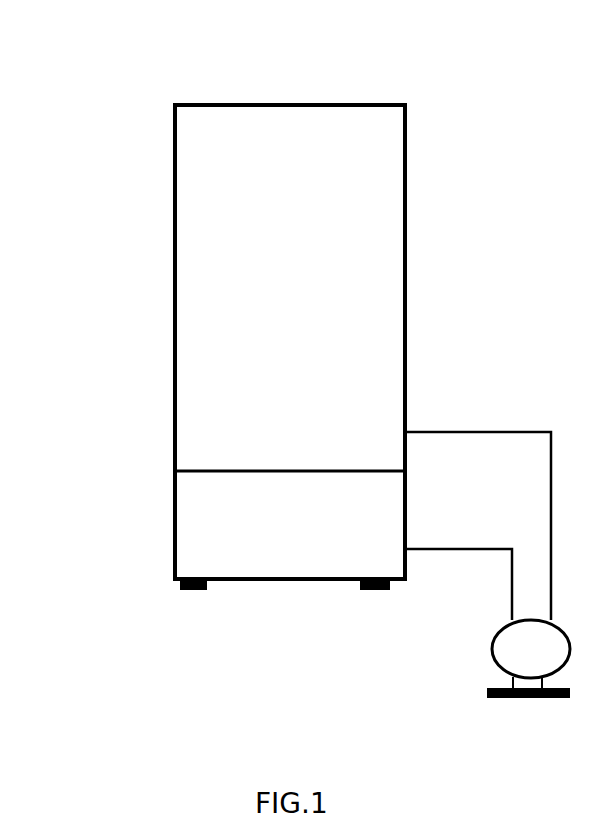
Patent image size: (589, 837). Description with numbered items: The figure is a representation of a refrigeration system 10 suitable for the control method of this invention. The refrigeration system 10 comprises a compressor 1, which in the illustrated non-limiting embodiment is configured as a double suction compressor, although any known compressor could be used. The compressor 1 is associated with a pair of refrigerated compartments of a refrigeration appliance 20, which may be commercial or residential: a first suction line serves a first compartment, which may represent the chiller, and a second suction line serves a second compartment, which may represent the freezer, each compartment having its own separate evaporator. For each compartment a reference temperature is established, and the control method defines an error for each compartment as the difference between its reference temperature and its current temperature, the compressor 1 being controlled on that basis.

The refrigeration system 10 is at (487, 360).
The refrigeration appliance 20 is at (124, 276).
The compressor 1 is at (528, 659).